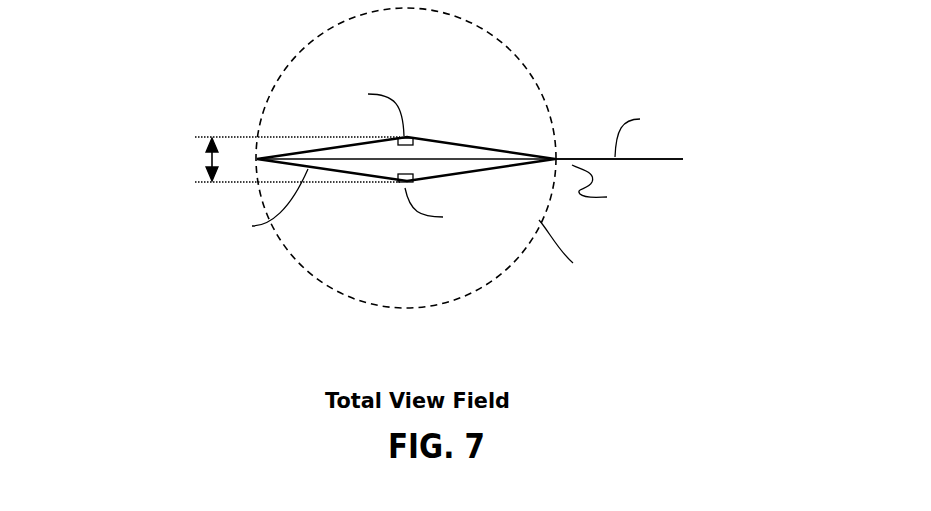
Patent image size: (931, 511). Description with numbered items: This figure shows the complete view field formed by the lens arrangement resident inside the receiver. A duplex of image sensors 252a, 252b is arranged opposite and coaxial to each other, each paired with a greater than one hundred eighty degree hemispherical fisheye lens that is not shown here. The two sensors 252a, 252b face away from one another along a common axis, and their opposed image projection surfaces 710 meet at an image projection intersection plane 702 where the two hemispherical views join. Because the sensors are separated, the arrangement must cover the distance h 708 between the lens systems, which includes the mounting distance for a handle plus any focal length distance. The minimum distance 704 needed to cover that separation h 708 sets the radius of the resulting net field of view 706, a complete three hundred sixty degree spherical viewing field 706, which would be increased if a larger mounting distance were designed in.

The image projection intersection plane 702 is at (667, 150).
The minimum distance to cover dh 704 is at (572, 162).
The 360-degree spherical viewing field 706 is at (500, 293).
The distance between the lens system h 708 is at (142, 167).
The image projection surfaces 710 is at (341, 186).
The image sensor 252a is at (417, 126).
The image sensor 252b is at (394, 199).